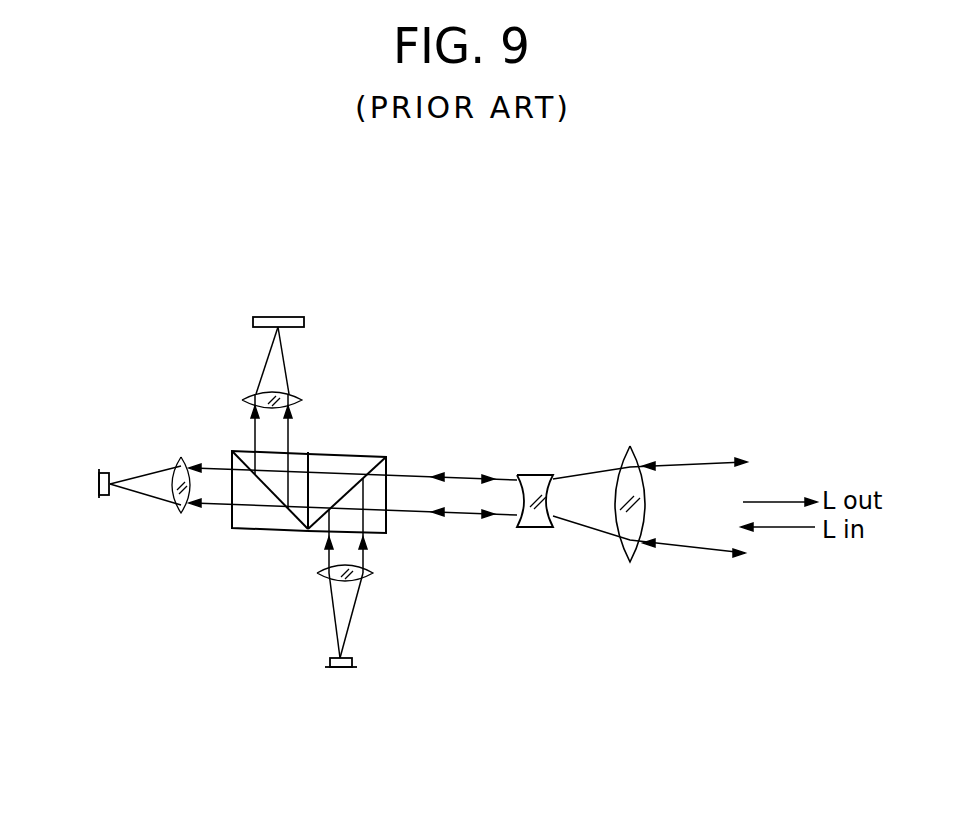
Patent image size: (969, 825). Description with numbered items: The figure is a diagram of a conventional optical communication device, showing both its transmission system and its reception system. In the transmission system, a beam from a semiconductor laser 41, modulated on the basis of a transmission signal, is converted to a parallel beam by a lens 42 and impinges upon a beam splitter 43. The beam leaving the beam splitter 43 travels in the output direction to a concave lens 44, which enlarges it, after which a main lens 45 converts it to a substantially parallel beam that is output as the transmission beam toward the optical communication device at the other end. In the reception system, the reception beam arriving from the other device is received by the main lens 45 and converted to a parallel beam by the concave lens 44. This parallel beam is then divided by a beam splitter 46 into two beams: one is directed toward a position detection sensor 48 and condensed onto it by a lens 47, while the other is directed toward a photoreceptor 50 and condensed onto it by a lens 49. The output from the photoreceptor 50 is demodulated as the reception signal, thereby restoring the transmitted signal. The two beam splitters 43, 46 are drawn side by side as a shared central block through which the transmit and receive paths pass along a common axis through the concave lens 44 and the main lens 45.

The semiconductor laser 41 is at (338, 672).
The lens 42 is at (375, 573).
The beam splitter 43 is at (355, 452).
The concave lens 44 is at (538, 475).
The main lens 45 is at (635, 448).
The beam splitter 46 is at (255, 531).
The lens 47 is at (250, 394).
The position detection sensor 48 is at (289, 316).
The lens 49 is at (178, 458).
The photoreceptor 50 is at (97, 485).